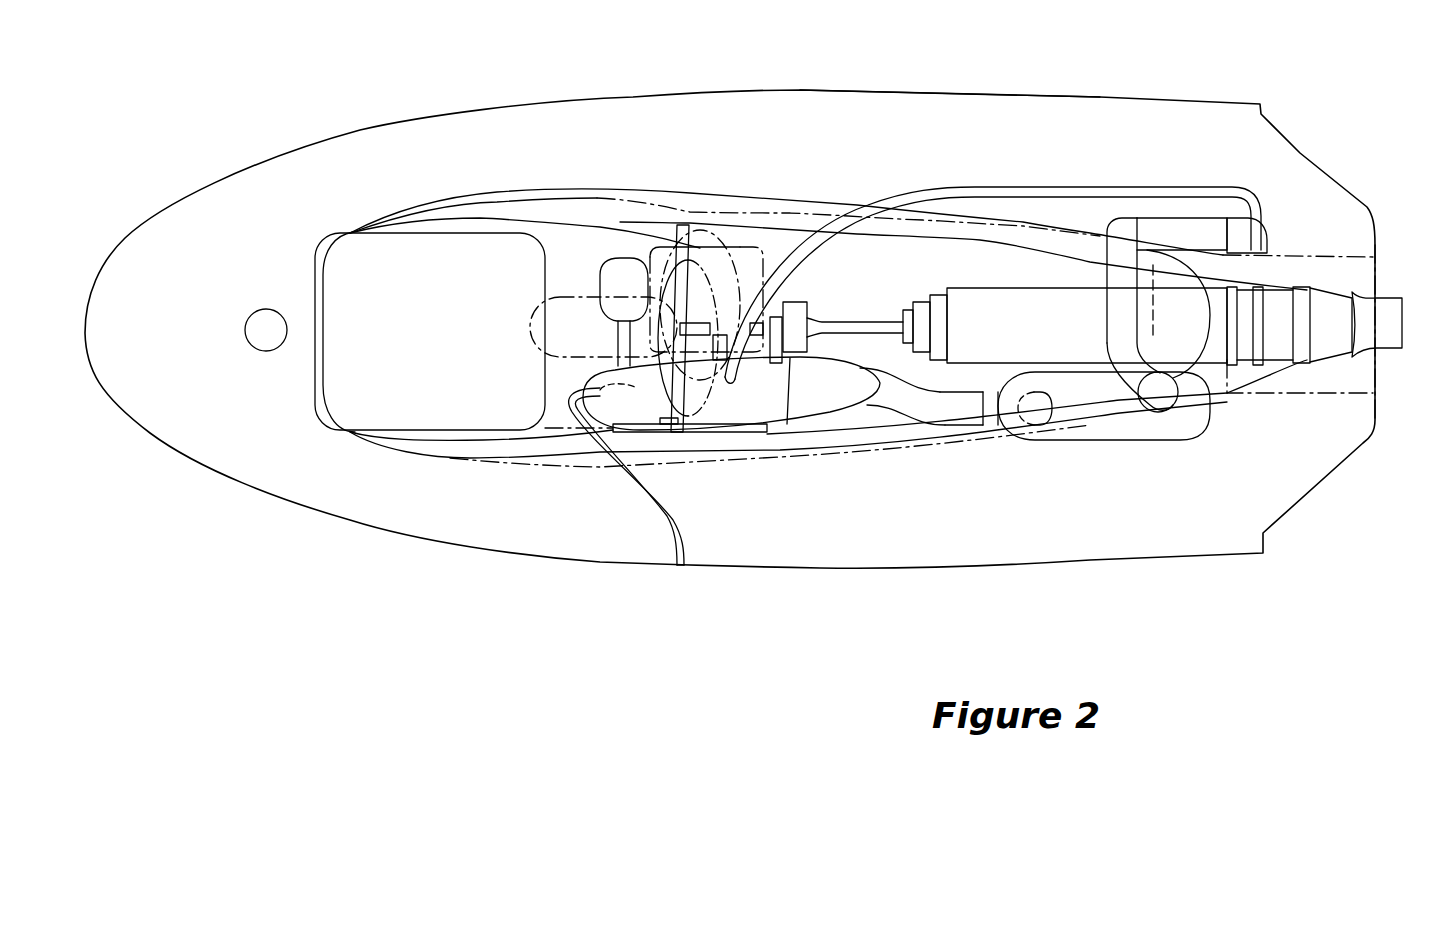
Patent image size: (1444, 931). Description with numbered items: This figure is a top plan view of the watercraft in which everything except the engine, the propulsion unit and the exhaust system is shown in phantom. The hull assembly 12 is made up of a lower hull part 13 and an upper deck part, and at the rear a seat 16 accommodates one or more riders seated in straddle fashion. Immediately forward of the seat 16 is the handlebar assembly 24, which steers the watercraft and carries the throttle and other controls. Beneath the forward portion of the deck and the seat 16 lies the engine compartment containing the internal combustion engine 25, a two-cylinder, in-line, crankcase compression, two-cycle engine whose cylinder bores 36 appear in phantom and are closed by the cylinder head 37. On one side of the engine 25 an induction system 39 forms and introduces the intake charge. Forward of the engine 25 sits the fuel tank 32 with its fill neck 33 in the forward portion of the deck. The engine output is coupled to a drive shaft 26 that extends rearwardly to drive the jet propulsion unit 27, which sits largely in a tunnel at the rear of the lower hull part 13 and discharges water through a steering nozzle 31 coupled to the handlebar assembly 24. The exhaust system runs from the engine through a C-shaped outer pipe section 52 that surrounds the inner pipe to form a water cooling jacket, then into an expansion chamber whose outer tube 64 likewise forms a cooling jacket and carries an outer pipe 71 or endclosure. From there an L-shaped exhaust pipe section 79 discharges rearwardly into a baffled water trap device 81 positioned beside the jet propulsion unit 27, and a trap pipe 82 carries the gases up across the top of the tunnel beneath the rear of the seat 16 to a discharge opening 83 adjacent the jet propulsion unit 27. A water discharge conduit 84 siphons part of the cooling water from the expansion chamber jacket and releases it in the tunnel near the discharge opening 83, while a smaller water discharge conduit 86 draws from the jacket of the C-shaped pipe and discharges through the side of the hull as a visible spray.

The hull assembly 12 is at (878, 92).
The lower hull part 13 is at (427, 117).
The seat 16 is at (917, 218).
The handlebar assembly 24 is at (731, 237).
The internal combustion engine 25 is at (757, 436).
The drive shaft 26 is at (853, 318).
The jet propulsion unit 27 is at (1043, 290).
The steering nozzle 31 is at (1372, 290).
The fuel tank 32 is at (340, 230).
The fill neck 33 is at (255, 348).
The cylinder bores 36 is at (585, 323).
The cylinder head 37 is at (731, 393).
The induction system 39 is at (620, 262).
The outer pipe section 52 is at (644, 433).
The outer tube 64 is at (780, 405).
The outer pipe 71 is at (815, 422).
The exhaust pipe section 79 is at (927, 408).
The water trap device 81 is at (1080, 443).
The trap pipe 82 is at (1182, 218).
The discharge opening 83 is at (1253, 243).
The water discharge conduit 84 is at (980, 192).
The water discharge conduit 86 is at (690, 537).